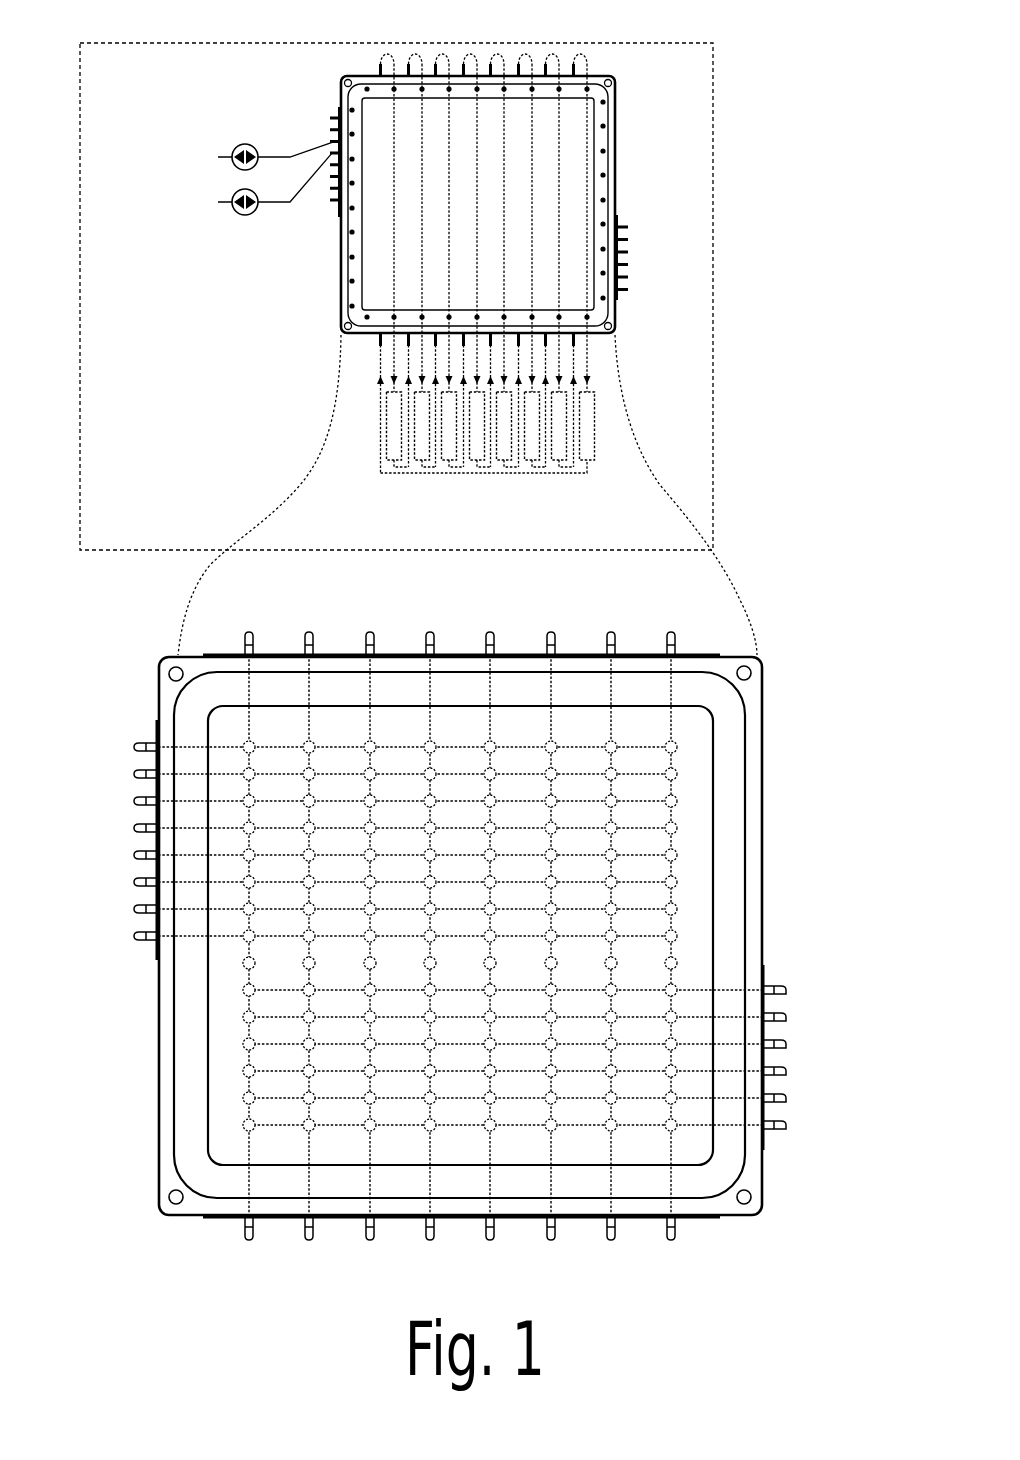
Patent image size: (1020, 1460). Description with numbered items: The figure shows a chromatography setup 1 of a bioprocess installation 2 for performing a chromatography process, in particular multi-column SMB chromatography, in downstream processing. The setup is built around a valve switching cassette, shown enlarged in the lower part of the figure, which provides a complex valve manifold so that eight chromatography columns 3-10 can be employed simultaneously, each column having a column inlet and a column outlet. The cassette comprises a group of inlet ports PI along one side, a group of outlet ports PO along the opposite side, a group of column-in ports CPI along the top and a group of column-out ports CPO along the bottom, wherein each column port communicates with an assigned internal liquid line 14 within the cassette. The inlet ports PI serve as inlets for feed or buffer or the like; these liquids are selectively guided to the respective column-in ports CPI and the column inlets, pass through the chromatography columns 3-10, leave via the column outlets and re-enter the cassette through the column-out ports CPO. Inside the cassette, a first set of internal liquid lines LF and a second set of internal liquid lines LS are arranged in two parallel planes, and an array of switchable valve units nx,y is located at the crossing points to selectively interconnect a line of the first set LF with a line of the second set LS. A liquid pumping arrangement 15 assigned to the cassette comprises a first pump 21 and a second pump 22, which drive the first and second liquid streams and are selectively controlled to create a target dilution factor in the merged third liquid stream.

The chromatography setup 1 is at (641, 39).
The bioprocess installation 2 is at (818, 126).
The internal liquid line 14 is at (466, 936).
The liquid pumping arrangement 15 is at (218, 162).
The first pump 21 is at (241, 146).
The second pump 22 is at (241, 192).
The chromatography columns 3-10 is at (588, 483).
The outlet ports PO is at (632, 222).
The inlet ports PI is at (108, 965).
The column-in ports CPI is at (680, 632).
The column-out ports CPO is at (680, 1247).
The first set of internal liquid lines LF is at (572, 828).
The second set of internal liquid lines LS is at (551, 893).
The switchable valve units nx,y is at (486, 940).